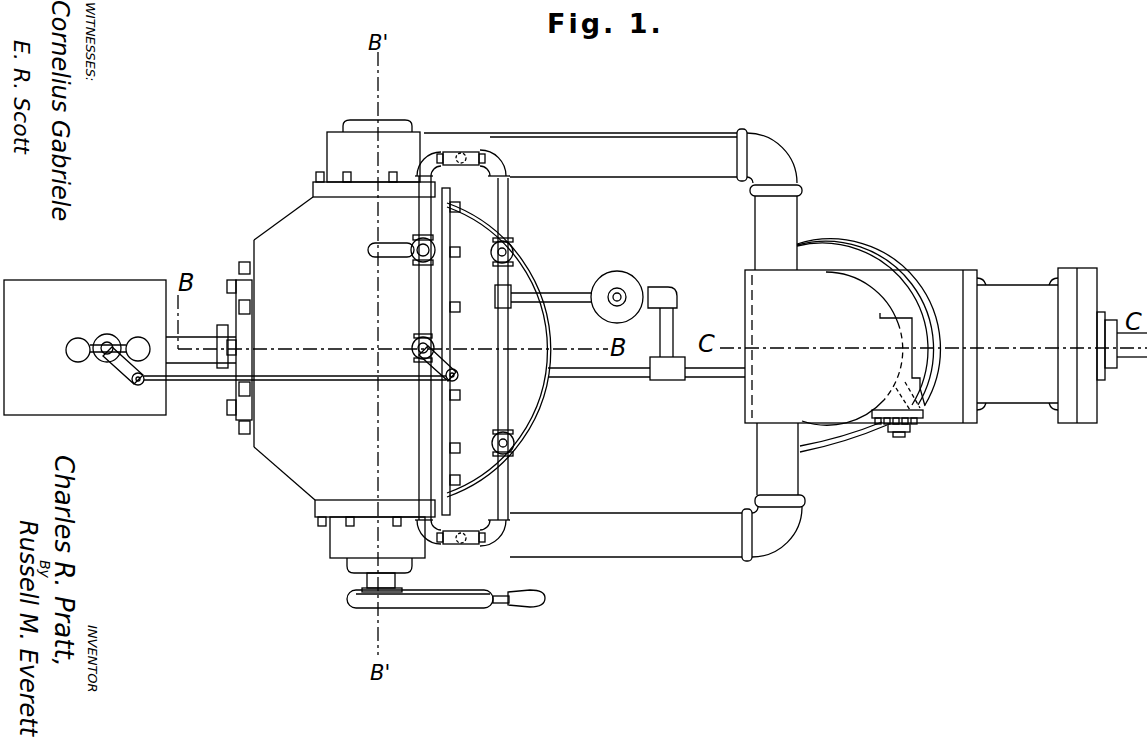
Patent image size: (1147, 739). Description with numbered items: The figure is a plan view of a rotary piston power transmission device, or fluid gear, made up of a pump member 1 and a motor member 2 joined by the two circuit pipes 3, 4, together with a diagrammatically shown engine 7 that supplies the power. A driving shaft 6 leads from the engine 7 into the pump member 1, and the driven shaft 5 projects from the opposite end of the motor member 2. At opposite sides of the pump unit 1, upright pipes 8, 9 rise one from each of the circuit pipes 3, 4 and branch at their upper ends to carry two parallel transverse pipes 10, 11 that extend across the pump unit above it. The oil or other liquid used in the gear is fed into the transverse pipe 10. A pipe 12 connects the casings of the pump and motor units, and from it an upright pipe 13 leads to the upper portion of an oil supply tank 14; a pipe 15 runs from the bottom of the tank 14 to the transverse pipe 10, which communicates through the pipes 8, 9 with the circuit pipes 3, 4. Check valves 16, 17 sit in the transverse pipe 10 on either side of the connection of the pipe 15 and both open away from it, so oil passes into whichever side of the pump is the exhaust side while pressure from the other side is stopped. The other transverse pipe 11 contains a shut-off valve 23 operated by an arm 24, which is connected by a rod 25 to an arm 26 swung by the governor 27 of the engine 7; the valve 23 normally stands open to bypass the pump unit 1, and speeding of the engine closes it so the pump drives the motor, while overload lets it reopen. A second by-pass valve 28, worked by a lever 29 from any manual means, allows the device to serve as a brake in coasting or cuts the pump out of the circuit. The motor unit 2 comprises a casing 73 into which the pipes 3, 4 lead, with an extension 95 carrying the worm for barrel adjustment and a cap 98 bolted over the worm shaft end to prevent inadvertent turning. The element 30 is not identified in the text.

The pump member 1 is at (266, 233).
The motor member 2 is at (915, 270).
The pipe 3 is at (647, 550).
The pipe 4 is at (645, 133).
The driven shaft 5 is at (1128, 358).
The driving shaft 6 is at (192, 340).
The engine 7 is at (120, 281).
The pipe 8 is at (466, 547).
The pipe 9 is at (466, 152).
The transverse pipe 10 is at (505, 362).
The transverse pipe 11 is at (415, 298).
The pipe 12 is at (593, 378).
The upright pipe 13 is at (677, 300).
The oil supply tank 14 is at (621, 271).
The pipe 15 is at (558, 293).
The check valve 16 is at (515, 448).
The check valve 17 is at (513, 250).
The shut-off valve 23 is at (411, 350).
The arm 24 is at (443, 363).
The rod 25 is at (195, 382).
The arm 26 is at (124, 372).
The governor 27 is at (72, 338).
The second by-pass valve 28 is at (415, 241).
The lever 29 is at (370, 246).
The vessel wall 30 is at (292, 462).
The casing 73 is at (829, 405).
The extension 95 is at (927, 412).
The cap 98 is at (900, 437).